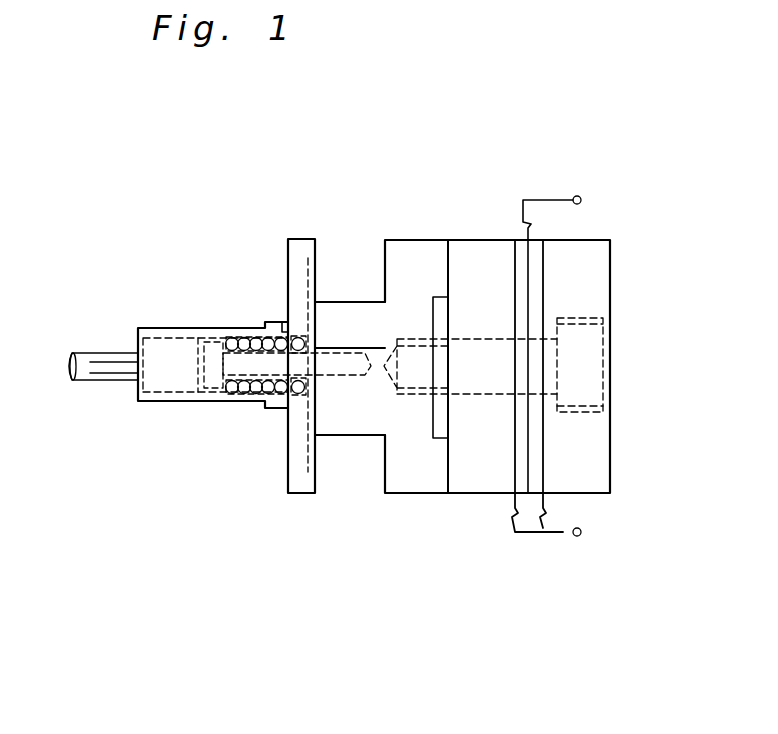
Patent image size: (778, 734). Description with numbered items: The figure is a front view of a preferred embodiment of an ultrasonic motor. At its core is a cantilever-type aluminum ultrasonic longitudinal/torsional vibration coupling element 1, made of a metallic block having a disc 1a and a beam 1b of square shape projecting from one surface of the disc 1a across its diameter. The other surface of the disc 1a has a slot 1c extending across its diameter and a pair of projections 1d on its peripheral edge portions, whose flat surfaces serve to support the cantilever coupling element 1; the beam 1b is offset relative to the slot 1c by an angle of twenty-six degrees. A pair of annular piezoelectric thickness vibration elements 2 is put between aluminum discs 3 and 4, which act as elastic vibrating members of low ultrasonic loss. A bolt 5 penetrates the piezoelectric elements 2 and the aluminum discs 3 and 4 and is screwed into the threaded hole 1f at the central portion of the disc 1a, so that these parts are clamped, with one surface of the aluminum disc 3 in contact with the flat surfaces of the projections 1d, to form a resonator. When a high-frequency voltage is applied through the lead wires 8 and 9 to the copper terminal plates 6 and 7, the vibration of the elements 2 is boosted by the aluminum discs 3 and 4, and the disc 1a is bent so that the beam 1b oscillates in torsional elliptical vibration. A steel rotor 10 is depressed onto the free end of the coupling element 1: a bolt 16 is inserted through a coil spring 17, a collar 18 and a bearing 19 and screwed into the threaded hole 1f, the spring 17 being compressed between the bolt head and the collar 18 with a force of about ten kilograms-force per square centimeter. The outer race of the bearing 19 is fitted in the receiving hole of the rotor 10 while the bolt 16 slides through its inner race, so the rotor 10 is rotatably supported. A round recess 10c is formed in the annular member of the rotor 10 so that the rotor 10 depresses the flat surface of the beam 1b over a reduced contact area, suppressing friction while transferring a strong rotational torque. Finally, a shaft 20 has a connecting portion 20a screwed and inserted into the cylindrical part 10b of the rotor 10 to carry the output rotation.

The ultrasonic longitudinal/torsional vibration coupling element 1 is at (440, 153).
The disc 1a is at (422, 240).
The beam 1b is at (364, 300).
The slot 1c is at (440, 440).
The projections 1d is at (452, 255).
The threaded hole 1f is at (336, 385).
The piezoelectric thickness vibration elements 2 is at (520, 467).
The aluminum disc 3 is at (490, 256).
The aluminum disc 4 is at (605, 260).
The bolt 5 is at (608, 357).
The terminal plate 6 is at (528, 232).
The terminal plate 7 is at (513, 503).
The lead wire 8 is at (558, 200).
The lead wire 9 is at (560, 540).
The rotor 10 is at (300, 239).
The cylindrical part 10b is at (205, 402).
The round recess 10c is at (308, 268).
The bolt 16 is at (208, 342).
The coil spring 17 is at (243, 343).
The collar 18 is at (277, 337).
The bearing 19 is at (290, 420).
The shaft 20 is at (88, 358).
The connecting portion 20a is at (152, 402).